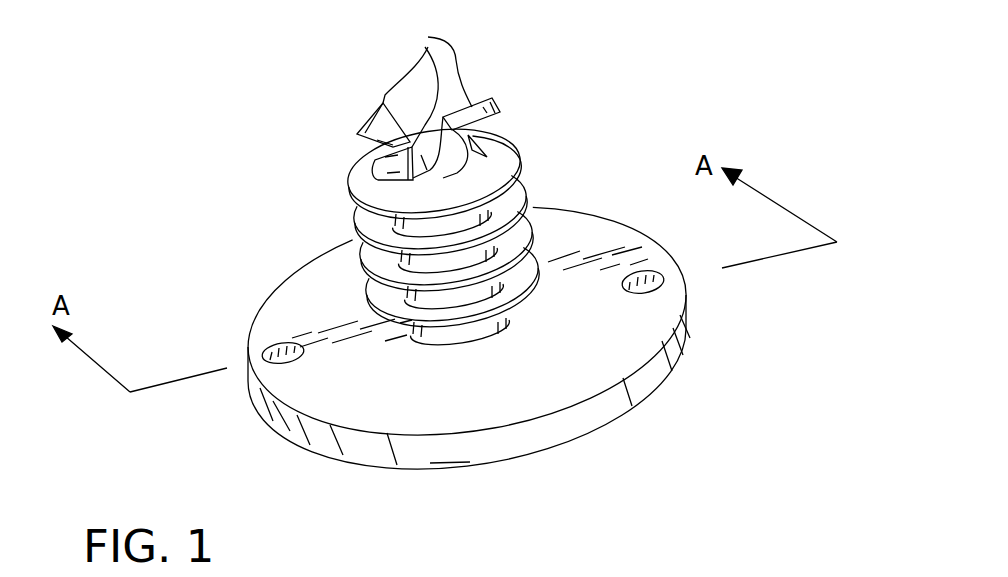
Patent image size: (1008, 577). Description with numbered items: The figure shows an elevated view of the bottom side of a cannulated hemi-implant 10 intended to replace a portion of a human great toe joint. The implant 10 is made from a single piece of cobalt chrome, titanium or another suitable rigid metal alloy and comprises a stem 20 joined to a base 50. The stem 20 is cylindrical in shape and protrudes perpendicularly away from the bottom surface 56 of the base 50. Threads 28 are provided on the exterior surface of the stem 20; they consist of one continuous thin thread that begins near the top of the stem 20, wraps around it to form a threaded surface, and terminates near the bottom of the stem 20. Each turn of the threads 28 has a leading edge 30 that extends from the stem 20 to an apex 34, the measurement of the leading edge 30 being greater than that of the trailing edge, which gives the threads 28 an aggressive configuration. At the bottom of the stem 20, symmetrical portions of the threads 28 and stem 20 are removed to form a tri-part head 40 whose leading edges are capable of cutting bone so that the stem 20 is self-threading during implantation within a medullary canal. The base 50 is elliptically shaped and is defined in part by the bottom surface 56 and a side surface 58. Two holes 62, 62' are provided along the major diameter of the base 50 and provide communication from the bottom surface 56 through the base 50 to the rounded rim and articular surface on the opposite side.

The implant 10 is at (704, 300).
The stem 20 is at (358, 223).
The threads 28 is at (516, 147).
The leading edge 30 is at (368, 192).
The apex 34 is at (347, 197).
The tri-part head 40 is at (436, 37).
The base 50 is at (600, 430).
The bottom surface 56 is at (360, 410).
The side surface 58 is at (452, 458).
The hole 62 is at (231, 337).
The hole 62' is at (685, 249).